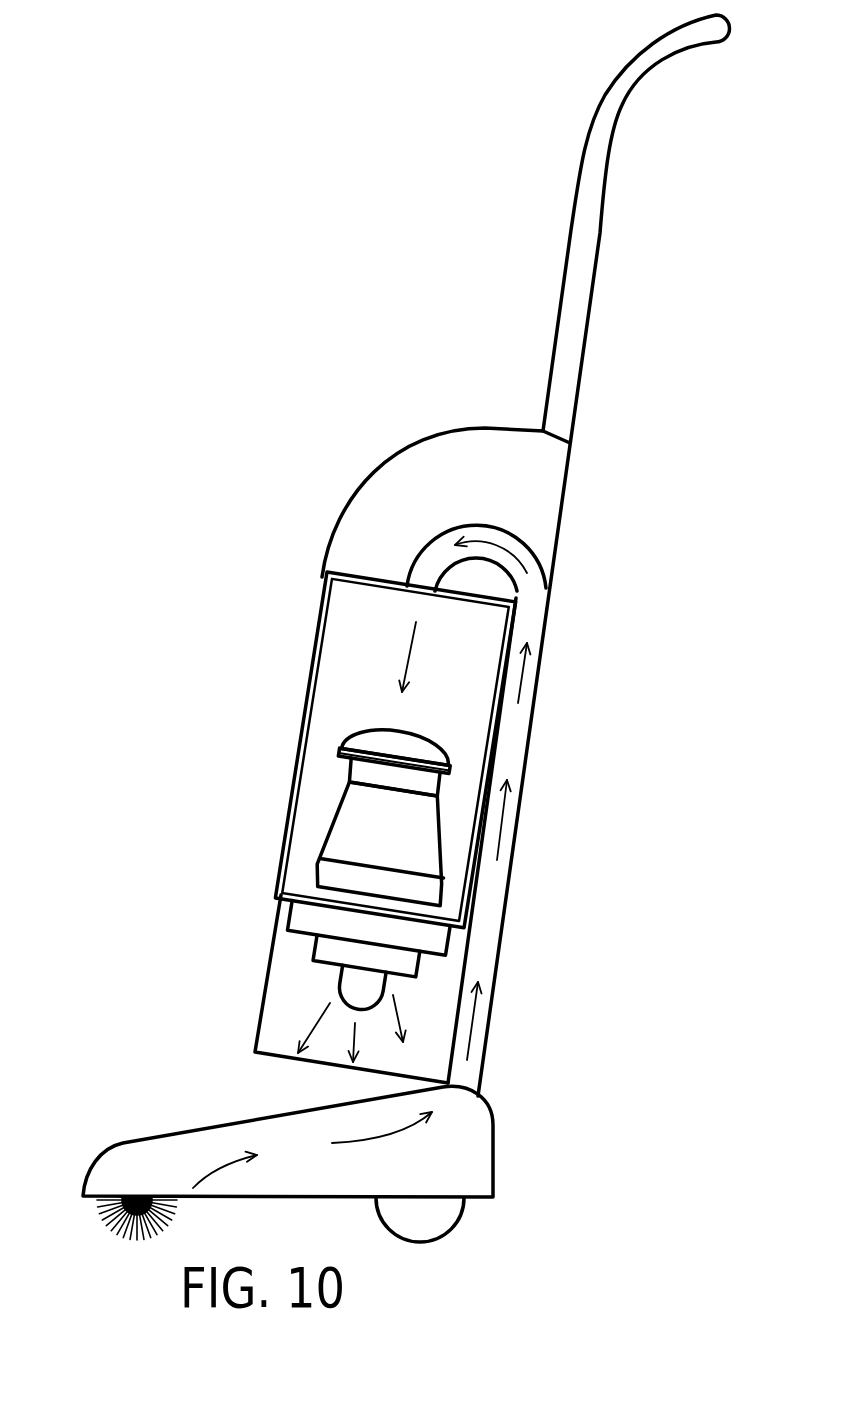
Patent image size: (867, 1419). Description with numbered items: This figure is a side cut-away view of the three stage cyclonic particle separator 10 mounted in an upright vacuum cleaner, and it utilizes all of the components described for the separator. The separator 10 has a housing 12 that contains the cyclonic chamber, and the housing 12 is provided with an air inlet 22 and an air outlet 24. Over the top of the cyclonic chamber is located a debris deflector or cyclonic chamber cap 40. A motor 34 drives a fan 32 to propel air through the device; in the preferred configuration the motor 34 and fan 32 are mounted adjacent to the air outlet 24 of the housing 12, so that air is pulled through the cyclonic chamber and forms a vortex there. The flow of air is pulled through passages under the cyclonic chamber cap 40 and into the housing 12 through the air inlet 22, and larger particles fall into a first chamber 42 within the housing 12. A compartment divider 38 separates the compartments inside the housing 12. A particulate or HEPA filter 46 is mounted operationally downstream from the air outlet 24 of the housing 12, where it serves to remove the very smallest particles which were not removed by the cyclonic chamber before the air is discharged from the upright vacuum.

The particle separator 10 is at (205, 722).
The housing 12 is at (305, 702).
The air inlet 22 is at (414, 590).
The air outlet 24 is at (325, 978).
The fan 32 is at (407, 968).
The motor 34 is at (363, 995).
The compartment divider 38 is at (417, 843).
The cyclonic chamber cap 40 is at (422, 747).
The first chamber 42 is at (300, 867).
The particulate filter 46 is at (433, 938).